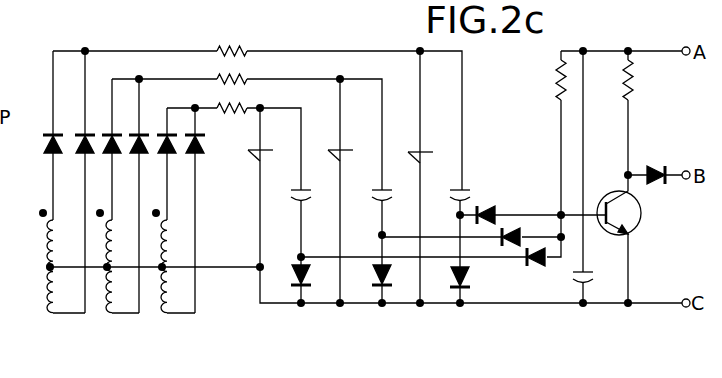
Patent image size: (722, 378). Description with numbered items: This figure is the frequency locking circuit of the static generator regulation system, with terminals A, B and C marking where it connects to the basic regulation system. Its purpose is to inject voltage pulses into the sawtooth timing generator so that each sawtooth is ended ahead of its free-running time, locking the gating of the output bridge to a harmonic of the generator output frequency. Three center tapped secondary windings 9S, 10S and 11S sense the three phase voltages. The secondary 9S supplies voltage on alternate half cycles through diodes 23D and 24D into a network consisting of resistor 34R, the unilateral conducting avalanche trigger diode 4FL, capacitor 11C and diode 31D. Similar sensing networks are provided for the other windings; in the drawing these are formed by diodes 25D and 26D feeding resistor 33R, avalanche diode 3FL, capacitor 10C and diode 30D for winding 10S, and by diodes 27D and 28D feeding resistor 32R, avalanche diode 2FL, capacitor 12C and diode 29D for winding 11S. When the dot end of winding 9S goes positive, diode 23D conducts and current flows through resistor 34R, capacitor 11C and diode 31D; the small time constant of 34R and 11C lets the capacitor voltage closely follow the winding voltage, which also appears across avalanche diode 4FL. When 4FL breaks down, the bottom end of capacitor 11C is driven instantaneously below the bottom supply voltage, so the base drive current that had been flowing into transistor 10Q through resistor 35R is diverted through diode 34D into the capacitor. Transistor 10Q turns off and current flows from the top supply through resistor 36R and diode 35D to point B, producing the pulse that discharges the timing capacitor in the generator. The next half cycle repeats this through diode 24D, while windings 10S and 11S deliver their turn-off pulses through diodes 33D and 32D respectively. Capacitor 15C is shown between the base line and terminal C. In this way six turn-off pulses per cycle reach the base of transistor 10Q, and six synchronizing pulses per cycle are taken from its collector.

The resistor 34R is at (242, 49).
The resistor 33R is at (242, 77).
The resistor 32R is at (242, 106).
The diode 23D is at (43, 143).
The diode 24D is at (76, 151).
The diode 25D is at (110, 134).
The diode 26D is at (166, 135).
The diode 27D is at (200, 154).
The diode 28D is at (175, 153).
The center tapped secondary winding 9S is at (61, 283).
The secondary winding 10S is at (124, 283).
The secondary winding 11S is at (182, 283).
The fusible link 2FL is at (250, 149).
The fusible link 3FL is at (337, 150).
The avalanche trigger diode 4FL is at (416, 152).
The capacitor 12C is at (304, 200).
The capacitor 10C is at (384, 200).
The capacitor 11C is at (461, 200).
The capacitor 15C is at (584, 279).
The diode 29D is at (290, 272).
The diode 30D is at (371, 272).
The diode 31D is at (470, 274).
The diode 32D is at (532, 268).
The diode 33D is at (508, 243).
The diode 34D is at (489, 208).
The diode 35D is at (703, 128).
The resistor 35R is at (539, 86).
The resistor 36R is at (634, 90).
The transistor 10Q is at (607, 194).